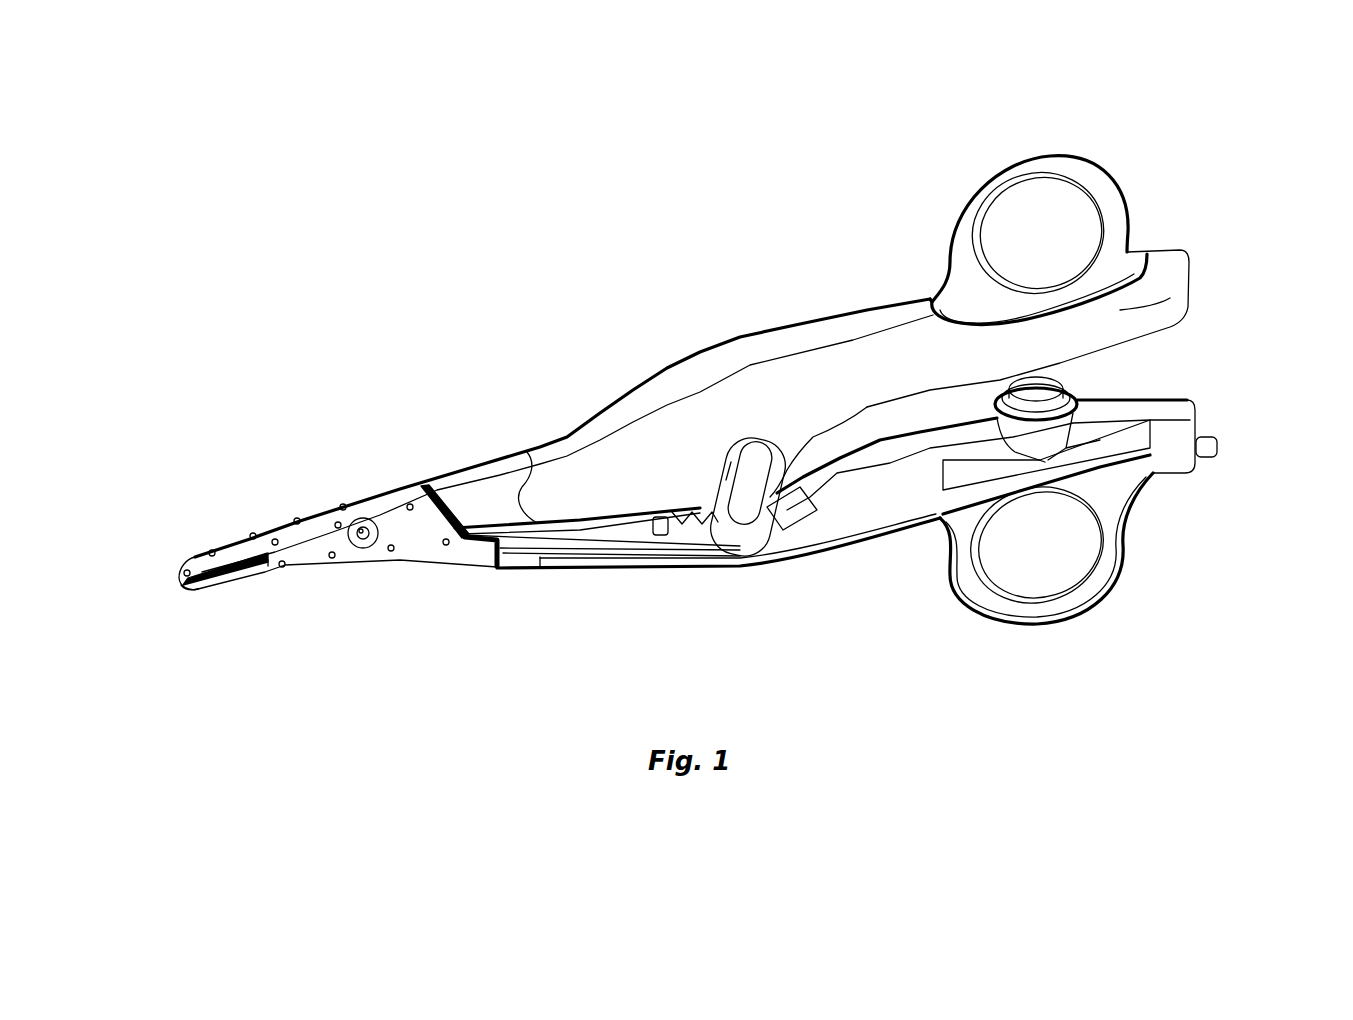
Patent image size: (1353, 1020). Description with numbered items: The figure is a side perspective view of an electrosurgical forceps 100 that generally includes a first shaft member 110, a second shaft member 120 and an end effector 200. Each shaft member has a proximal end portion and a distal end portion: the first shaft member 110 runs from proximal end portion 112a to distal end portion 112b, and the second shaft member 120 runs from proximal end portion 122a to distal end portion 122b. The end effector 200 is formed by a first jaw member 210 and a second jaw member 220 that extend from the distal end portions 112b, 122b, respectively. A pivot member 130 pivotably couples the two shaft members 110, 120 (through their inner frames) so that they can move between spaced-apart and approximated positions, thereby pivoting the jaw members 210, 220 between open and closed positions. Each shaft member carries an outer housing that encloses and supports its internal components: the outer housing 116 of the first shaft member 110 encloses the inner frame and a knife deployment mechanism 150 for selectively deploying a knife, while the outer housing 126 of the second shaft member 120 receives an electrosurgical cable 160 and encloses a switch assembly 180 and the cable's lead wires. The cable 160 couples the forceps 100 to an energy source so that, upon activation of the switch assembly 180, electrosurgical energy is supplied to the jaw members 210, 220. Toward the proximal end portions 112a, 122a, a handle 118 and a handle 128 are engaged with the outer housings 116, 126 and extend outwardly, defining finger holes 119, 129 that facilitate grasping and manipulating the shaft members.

The forceps 100 is at (611, 264).
The first shaft member 110 is at (793, 308).
The proximal end portion of first shaft member 112a is at (1191, 297).
The distal end portion of first shaft member 112b is at (450, 487).
The outer housing of first shaft member 116 is at (890, 346).
The handle of first shaft member 118 is at (1043, 160).
The finger hole of first handle 119 is at (1080, 210).
The second shaft member 120 is at (858, 542).
The proximal end portion of second shaft member 122a is at (1175, 463).
The distal end portion of second shaft member 122b is at (517, 562).
The outer housing of second shaft member 126 is at (898, 515).
The handle of second shaft member 128 is at (1115, 537).
The finger hole of second handle 129 is at (1070, 563).
The pivot member 130 is at (360, 549).
The knife deployment mechanism 150 is at (761, 425).
The electrosurgical cable 160 is at (1218, 442).
The switch assembly 180 is at (1078, 377).
The end effector 200 is at (487, 627).
The first jaw member 210 is at (230, 573).
The second jaw member 220 is at (190, 559).